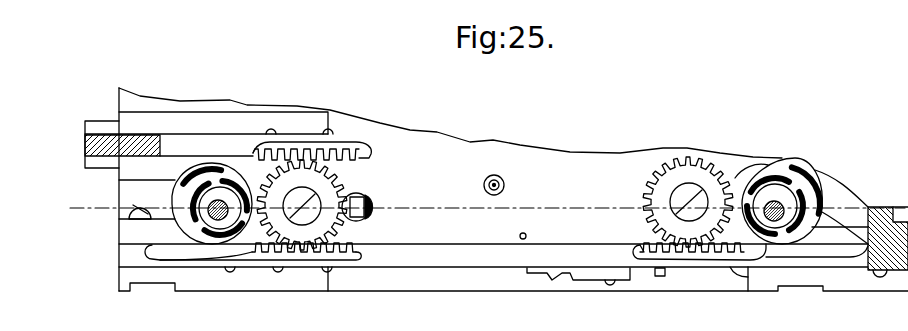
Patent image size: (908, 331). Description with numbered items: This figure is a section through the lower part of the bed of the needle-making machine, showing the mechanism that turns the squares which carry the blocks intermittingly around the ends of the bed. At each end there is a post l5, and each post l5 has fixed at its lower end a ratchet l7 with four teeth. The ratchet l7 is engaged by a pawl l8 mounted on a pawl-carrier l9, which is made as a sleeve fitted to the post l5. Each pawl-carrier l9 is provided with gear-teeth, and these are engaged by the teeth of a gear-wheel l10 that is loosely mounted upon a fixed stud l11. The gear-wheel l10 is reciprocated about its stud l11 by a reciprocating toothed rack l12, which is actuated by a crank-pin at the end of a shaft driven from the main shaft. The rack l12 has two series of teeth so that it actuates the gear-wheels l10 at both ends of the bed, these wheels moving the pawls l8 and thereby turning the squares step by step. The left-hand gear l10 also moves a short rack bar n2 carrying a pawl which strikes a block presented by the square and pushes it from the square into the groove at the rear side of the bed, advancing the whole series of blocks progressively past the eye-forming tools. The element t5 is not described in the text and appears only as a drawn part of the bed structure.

The short rack bar n2 is at (312, 148).
The reciprocating toothed rack l12 is at (506, 254).
The bracket t5 is at (553, 280).
The gear-wheel l10 is at (495, 203).
The fixed stud l11 is at (495, 204).
The pawl-carrier l9 is at (188, 181).
The pawl l8 is at (806, 163).
The ratchet l7 is at (500, 205).
The post l5 is at (767, 180).